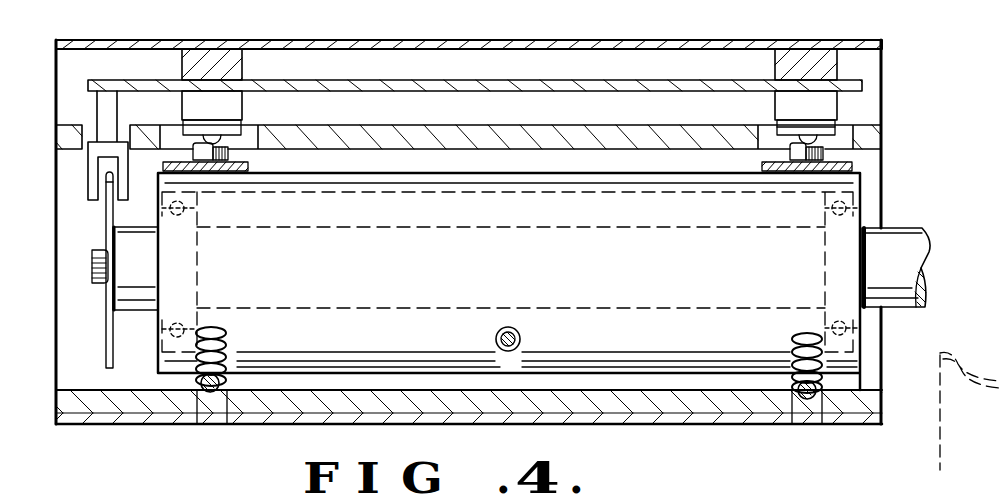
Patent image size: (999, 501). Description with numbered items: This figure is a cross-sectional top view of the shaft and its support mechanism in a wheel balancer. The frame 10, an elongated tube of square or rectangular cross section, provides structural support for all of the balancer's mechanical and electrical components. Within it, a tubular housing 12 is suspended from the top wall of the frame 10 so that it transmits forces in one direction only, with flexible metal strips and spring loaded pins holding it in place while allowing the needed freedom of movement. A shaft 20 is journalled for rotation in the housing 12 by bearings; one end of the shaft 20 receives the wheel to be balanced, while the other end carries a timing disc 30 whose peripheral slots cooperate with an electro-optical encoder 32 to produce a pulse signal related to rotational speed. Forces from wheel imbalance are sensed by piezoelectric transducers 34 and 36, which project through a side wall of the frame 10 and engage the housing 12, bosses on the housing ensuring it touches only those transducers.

The frame 10 is at (622, 396).
The tubular housing 12 is at (575, 368).
The shaft 20 is at (918, 227).
The timing disc 30 is at (107, 362).
The electro-optical encoder 32 is at (93, 188).
The piezoelectric transducer 34 is at (796, 139).
The piezoelectric transducer 36 is at (227, 141).